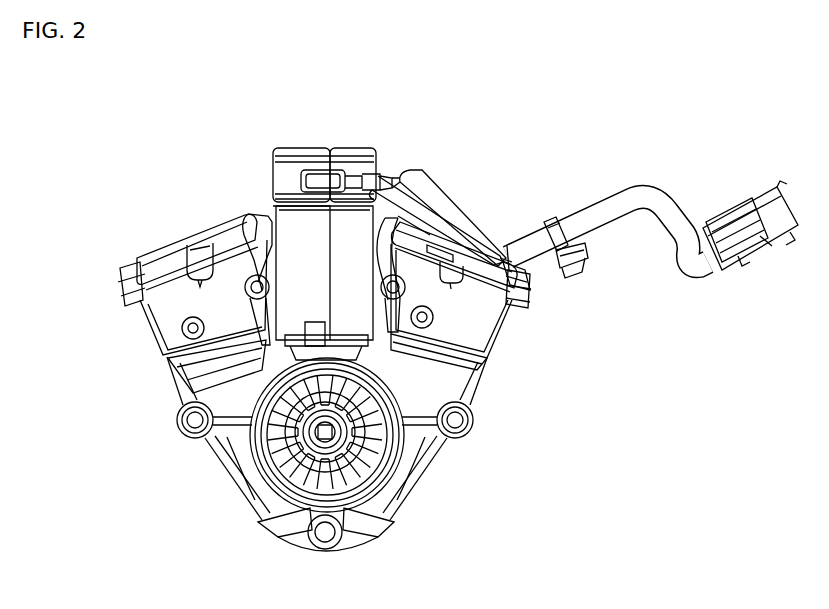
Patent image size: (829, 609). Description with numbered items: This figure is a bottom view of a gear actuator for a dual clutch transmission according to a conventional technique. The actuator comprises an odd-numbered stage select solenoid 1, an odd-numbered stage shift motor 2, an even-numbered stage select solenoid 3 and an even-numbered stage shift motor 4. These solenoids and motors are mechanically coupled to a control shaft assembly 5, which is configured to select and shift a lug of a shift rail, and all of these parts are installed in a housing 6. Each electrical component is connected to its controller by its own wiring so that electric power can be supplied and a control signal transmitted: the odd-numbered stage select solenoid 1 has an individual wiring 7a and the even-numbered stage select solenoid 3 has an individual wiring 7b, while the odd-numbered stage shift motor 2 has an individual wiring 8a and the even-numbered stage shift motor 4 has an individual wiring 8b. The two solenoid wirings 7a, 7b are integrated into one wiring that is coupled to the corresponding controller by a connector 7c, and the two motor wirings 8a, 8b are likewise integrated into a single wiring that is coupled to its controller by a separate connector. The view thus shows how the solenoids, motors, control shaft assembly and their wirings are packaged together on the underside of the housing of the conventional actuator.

The odd-numbered stage select solenoid 1 is at (300, 148).
The even-numbered stage select solenoid 3 is at (348, 148).
The odd-numbered stage shift motor 2 is at (492, 316).
The even-numbered stage shift motor 4 is at (160, 320).
The control shaft assembly 5 is at (320, 478).
The housing 6 is at (388, 480).
The individual wiring 7a is at (425, 208).
The individual wiring 7b is at (456, 210).
The connector 7c is at (765, 200).
The individual wiring 8a is at (390, 222).
The individual wiring 8b is at (262, 222).